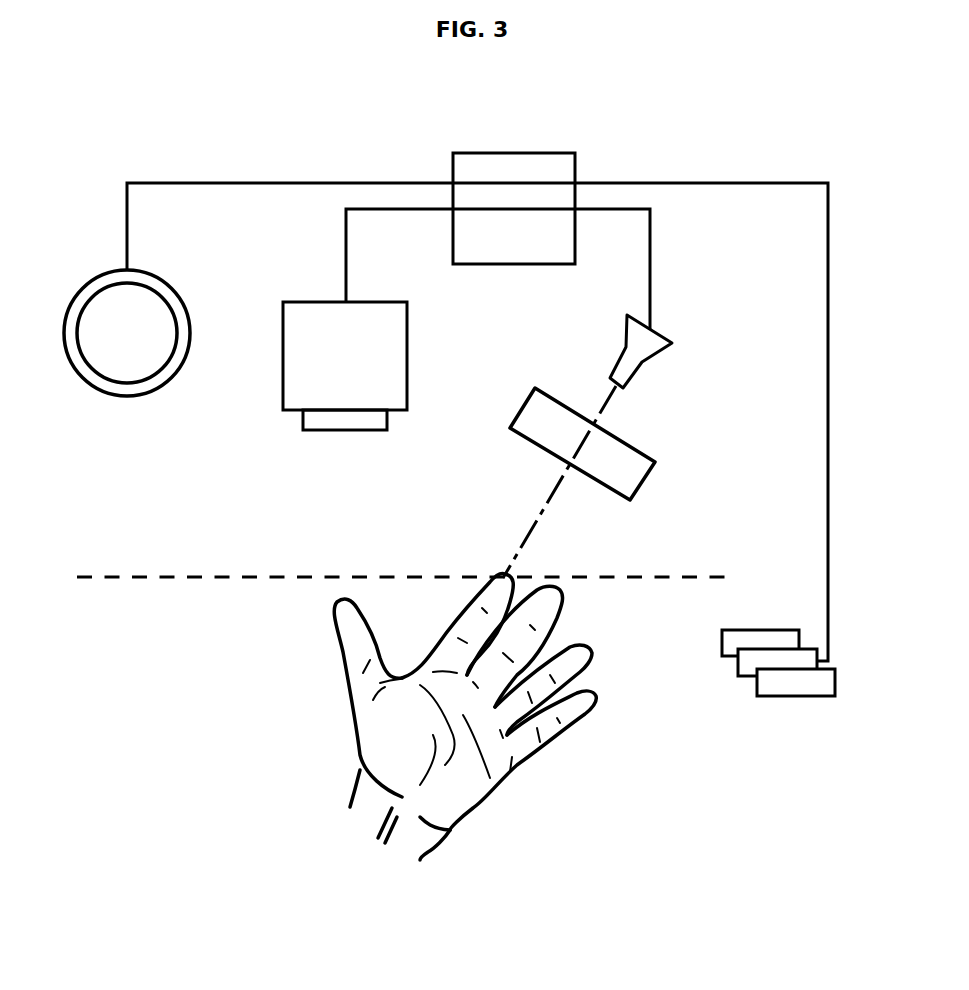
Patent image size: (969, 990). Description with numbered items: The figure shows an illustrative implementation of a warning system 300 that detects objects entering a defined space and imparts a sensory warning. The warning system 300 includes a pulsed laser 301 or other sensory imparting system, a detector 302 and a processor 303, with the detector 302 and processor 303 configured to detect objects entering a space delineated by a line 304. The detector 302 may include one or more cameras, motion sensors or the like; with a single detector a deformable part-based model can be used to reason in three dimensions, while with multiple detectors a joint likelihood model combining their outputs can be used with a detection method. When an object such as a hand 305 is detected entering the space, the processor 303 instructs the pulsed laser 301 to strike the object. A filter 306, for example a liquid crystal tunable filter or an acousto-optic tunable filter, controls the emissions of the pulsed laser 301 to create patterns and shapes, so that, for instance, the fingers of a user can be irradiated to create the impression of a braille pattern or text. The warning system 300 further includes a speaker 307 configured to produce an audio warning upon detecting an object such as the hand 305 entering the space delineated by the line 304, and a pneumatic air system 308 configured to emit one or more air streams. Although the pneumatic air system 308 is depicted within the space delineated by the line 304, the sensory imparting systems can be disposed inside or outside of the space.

The warning system 300 is at (305, 115).
The pulsed laser 301 is at (672, 343).
The detector 302 is at (283, 320).
The processor 303 is at (577, 163).
The line 304 is at (120, 577).
The hand 305 is at (348, 670).
The filter 306 is at (655, 460).
The speaker 307 is at (65, 317).
The pneumatic air system 308 is at (797, 697).